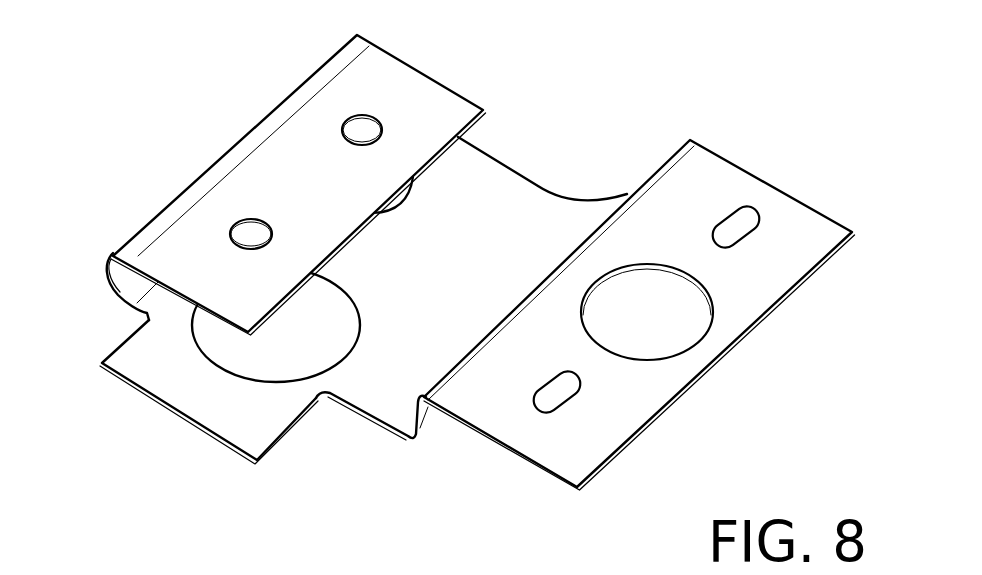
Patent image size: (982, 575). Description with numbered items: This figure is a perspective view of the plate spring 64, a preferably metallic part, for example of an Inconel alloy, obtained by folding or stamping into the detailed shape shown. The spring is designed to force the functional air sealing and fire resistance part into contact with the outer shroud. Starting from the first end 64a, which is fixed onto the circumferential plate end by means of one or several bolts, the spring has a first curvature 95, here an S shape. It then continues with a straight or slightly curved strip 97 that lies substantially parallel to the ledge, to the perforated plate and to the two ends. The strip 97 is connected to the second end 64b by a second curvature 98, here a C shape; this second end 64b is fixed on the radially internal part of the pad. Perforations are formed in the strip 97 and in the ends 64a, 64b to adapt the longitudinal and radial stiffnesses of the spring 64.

The plate spring 64 is at (626, 104).
The first end 64a is at (708, 342).
The second end 64b is at (203, 267).
The first curvature 95 is at (423, 430).
The strip 97 is at (193, 402).
The second curvature 98 is at (116, 301).